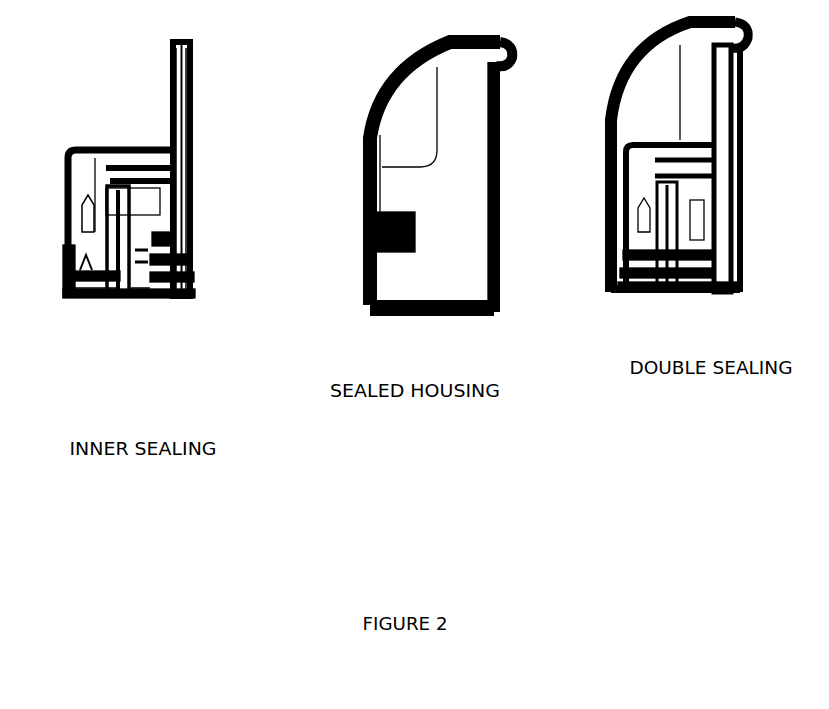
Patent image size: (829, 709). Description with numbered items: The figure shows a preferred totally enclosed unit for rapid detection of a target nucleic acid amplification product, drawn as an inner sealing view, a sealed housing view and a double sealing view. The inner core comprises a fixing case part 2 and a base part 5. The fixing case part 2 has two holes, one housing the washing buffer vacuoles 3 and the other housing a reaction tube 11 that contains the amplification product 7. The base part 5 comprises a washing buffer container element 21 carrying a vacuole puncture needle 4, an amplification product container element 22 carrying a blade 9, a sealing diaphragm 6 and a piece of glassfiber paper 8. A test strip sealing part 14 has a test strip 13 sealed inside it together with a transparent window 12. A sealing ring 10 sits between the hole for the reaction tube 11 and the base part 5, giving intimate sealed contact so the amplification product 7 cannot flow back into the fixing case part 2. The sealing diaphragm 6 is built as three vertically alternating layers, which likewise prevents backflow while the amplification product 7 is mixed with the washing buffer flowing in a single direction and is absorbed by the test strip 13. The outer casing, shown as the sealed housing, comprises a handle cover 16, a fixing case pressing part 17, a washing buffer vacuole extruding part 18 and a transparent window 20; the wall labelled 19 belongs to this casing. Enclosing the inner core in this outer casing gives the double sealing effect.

The fixing case part 2 is at (115, 148).
The washing buffer vacuoles 3 is at (88, 215).
The vacuole puncture needle 4 is at (68, 263).
The base part 5 is at (67, 290).
The sealing diaphragm 6 is at (128, 297).
The amplification product 7 is at (153, 300).
The glassfiber paper 8 is at (193, 287).
The blade 9 is at (197, 265).
The sealing ring 10 is at (163, 250).
The reaction tube 11 is at (147, 213).
The transparent window 12 is at (193, 157).
The test strip 13 is at (193, 110).
The test strip sealing part 14 is at (202, 160).
The handle cover 16 is at (434, 48).
The fixing case pressing part 17 is at (395, 125).
The washing buffer vacuole extruding part 18 is at (372, 232).
The side wall 19 is at (500, 258).
The transparent window 20 is at (493, 143).
The washing buffer container element 21 is at (85, 298).
The amplification product container element 22 is at (140, 298).